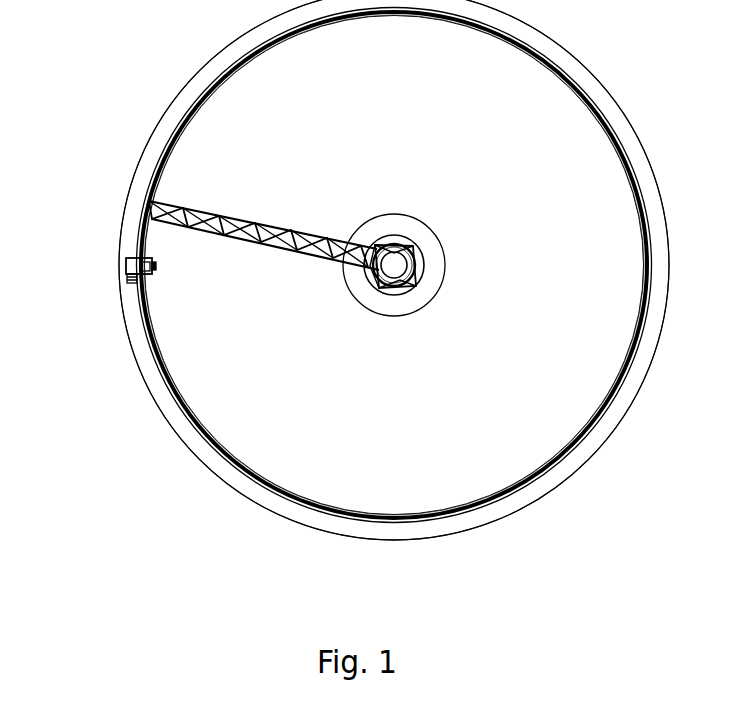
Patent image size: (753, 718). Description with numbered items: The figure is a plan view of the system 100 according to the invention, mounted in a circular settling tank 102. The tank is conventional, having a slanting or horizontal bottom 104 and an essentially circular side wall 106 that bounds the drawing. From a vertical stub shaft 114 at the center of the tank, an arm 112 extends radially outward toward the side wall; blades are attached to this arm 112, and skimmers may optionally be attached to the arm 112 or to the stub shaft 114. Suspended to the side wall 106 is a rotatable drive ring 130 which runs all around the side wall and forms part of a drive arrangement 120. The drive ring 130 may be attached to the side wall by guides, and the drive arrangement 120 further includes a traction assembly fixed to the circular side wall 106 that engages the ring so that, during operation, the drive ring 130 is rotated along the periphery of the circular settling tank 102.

The system 100 is at (114, 453).
The circular settling tank 102 is at (131, 348).
The bottom 104 is at (279, 452).
The circular side wall 106 is at (535, 484).
The arm 112 is at (260, 249).
The vertical stub shaft 114 is at (397, 289).
The drive arrangement 120 is at (125, 268).
The drive ring 130 is at (220, 72).